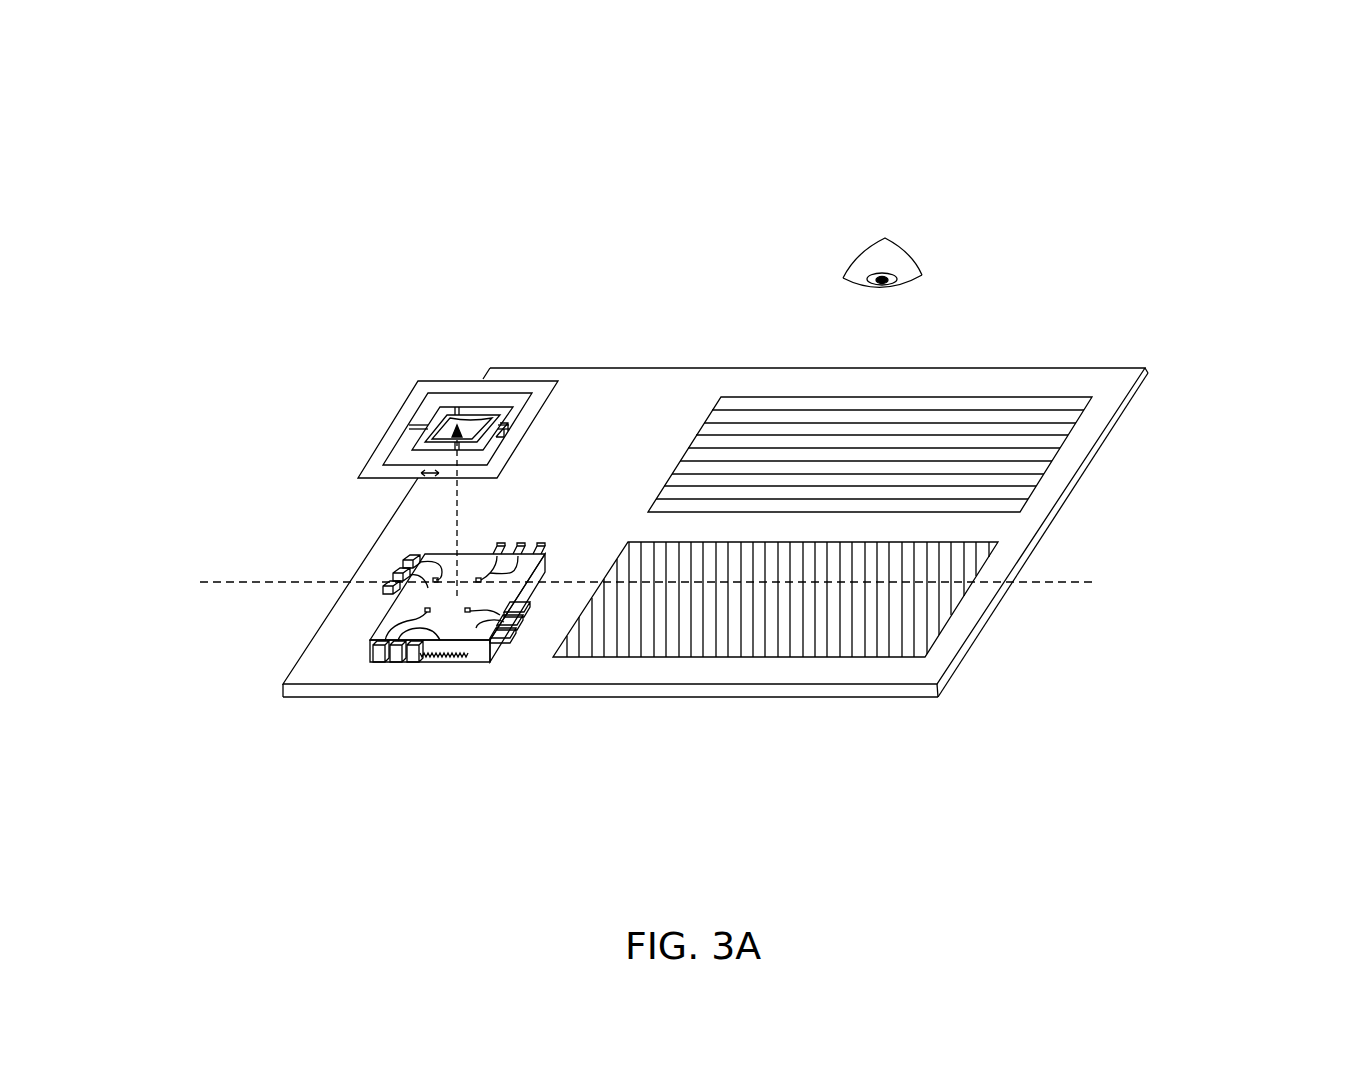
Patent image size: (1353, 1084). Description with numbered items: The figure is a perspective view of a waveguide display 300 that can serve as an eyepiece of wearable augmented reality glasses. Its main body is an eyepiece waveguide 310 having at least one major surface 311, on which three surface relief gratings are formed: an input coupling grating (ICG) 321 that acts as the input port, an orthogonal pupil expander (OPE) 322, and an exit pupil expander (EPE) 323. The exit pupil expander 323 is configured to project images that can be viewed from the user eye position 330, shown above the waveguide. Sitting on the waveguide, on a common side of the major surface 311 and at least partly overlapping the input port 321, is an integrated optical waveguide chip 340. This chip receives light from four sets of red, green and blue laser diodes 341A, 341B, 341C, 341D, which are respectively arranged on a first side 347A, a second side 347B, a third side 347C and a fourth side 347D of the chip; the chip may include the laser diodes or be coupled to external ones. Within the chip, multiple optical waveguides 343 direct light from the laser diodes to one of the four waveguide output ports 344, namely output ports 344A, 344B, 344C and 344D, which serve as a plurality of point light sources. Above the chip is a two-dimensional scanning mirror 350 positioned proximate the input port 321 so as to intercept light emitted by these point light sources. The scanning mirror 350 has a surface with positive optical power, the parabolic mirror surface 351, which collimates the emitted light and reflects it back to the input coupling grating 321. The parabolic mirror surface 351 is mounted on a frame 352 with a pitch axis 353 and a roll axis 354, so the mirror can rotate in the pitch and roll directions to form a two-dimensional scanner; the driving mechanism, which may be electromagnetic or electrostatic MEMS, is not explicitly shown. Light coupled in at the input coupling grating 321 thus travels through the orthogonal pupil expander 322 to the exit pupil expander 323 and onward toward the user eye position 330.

The waveguide display 300 is at (1205, 88).
The eyepiece waveguide 310 is at (1035, 515).
The major surface 311 is at (950, 652).
The input coupling grating (ICG) 321 is at (440, 656).
The orthogonal pupil expander (OPE) 322 is at (870, 618).
The exit pupil expander (EPE) 323 is at (995, 418).
The user eye position 330 is at (890, 215).
The integrated optical waveguide chip 340 is at (383, 625).
The first set of RGB laser diodes 341A is at (414, 557).
The second set of RGB laser diodes 341B is at (372, 642).
The third set of RGB laser diodes 341C is at (512, 628).
The fourth set of RGB laser diodes 341D is at (517, 549).
The optical waveguides 343 is at (507, 573).
The output ports 344 is at (398, 606).
The first output port 344A is at (428, 602).
The second output port 344B is at (454, 608).
The third output port 344C is at (484, 599).
The fourth output port 344D is at (464, 570).
The first side 347A is at (394, 608).
The second side 347B is at (443, 648).
The third side 347C is at (515, 592).
The fourth side 347D is at (463, 562).
The two-dimensional scanning mirror 350 is at (398, 366).
The parabolic mirror surface 351 is at (470, 422).
The frame 352 is at (388, 440).
The pitch axis 353 is at (427, 427).
The roll axis 354 is at (453, 387).